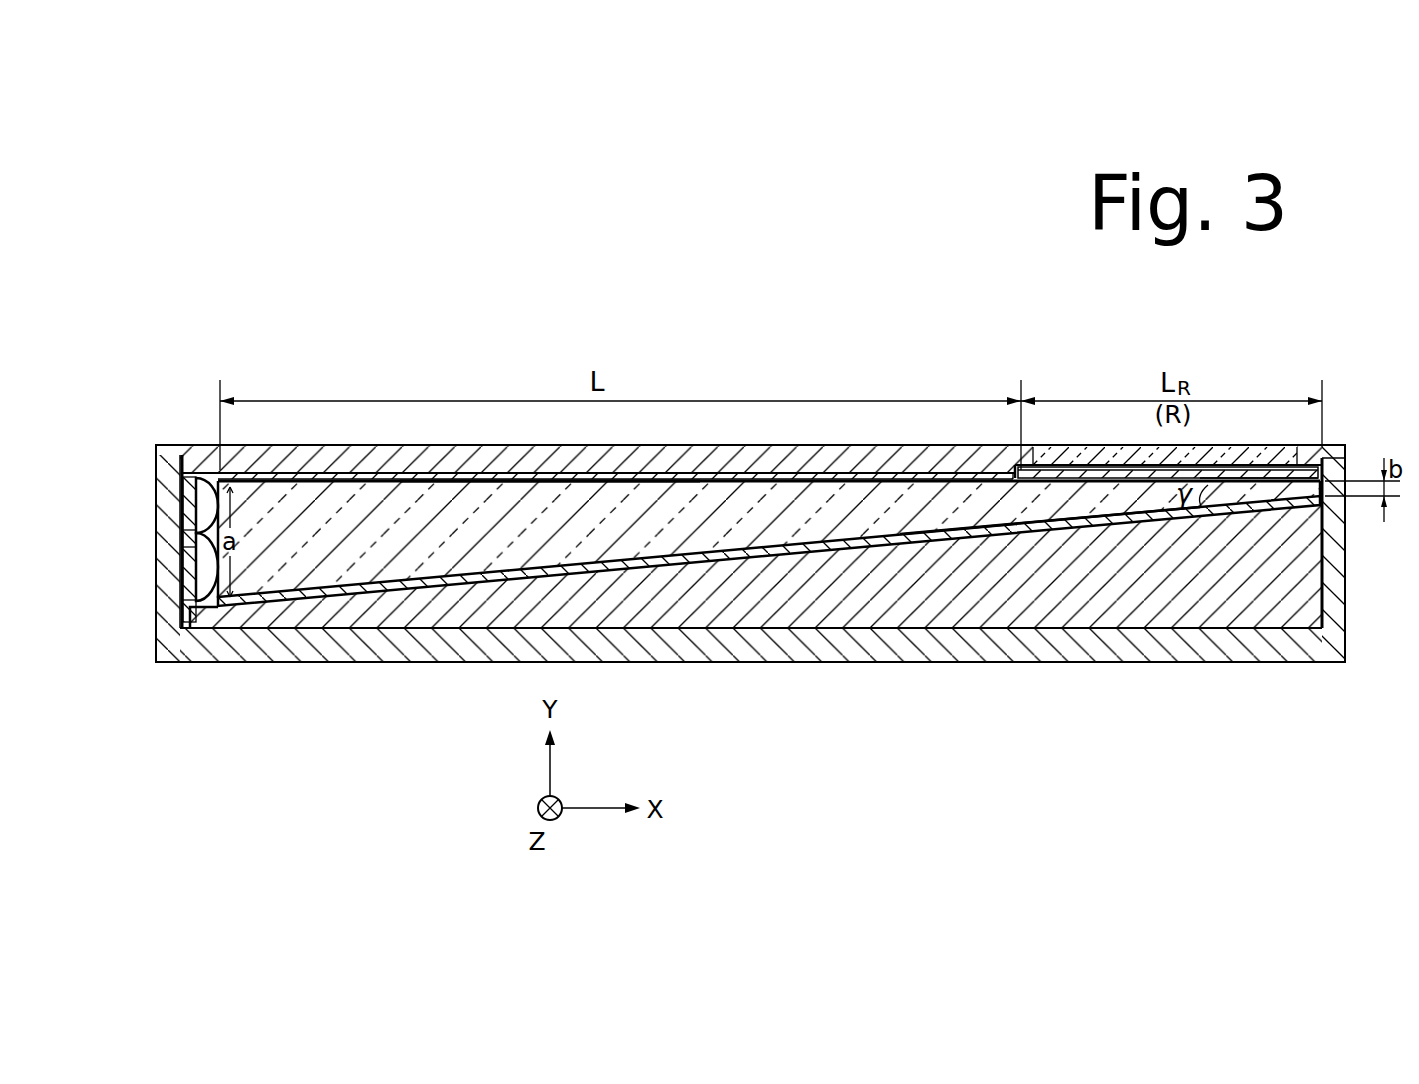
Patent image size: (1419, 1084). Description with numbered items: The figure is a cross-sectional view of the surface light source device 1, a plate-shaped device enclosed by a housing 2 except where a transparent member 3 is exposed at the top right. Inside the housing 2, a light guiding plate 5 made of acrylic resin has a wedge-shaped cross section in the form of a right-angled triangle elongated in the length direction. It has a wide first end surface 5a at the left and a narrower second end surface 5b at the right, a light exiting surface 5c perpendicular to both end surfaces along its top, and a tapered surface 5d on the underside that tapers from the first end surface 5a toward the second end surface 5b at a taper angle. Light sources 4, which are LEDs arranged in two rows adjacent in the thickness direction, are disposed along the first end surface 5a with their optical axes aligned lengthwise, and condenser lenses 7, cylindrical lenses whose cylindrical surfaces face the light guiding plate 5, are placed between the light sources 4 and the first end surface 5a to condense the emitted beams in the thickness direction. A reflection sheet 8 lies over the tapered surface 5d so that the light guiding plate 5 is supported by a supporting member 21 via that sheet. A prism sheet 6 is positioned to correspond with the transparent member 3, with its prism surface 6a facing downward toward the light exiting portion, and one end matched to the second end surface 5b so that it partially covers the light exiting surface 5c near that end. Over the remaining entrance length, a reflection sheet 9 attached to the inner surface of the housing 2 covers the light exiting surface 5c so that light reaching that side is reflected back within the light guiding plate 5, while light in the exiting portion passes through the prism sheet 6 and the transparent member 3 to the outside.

The surface light source device 1 is at (776, 267).
The housing 2 is at (868, 645).
The supporting member 21 is at (955, 592).
The transparent member 3 is at (1133, 447).
The light sources 4 is at (190, 570).
The light guiding plate 5 is at (335, 490).
The first end surface 5a is at (222, 585).
The second end surface 5b is at (1330, 495).
The light exiting surface 5c is at (527, 486).
The tapered surface 5d is at (1112, 516).
The prism sheet 6 is at (1083, 470).
The prism surface 6a is at (1223, 480).
The condenser lenses 7 is at (198, 490).
The reflection sheet 8 is at (1017, 528).
The reflection sheet 9 is at (435, 476).